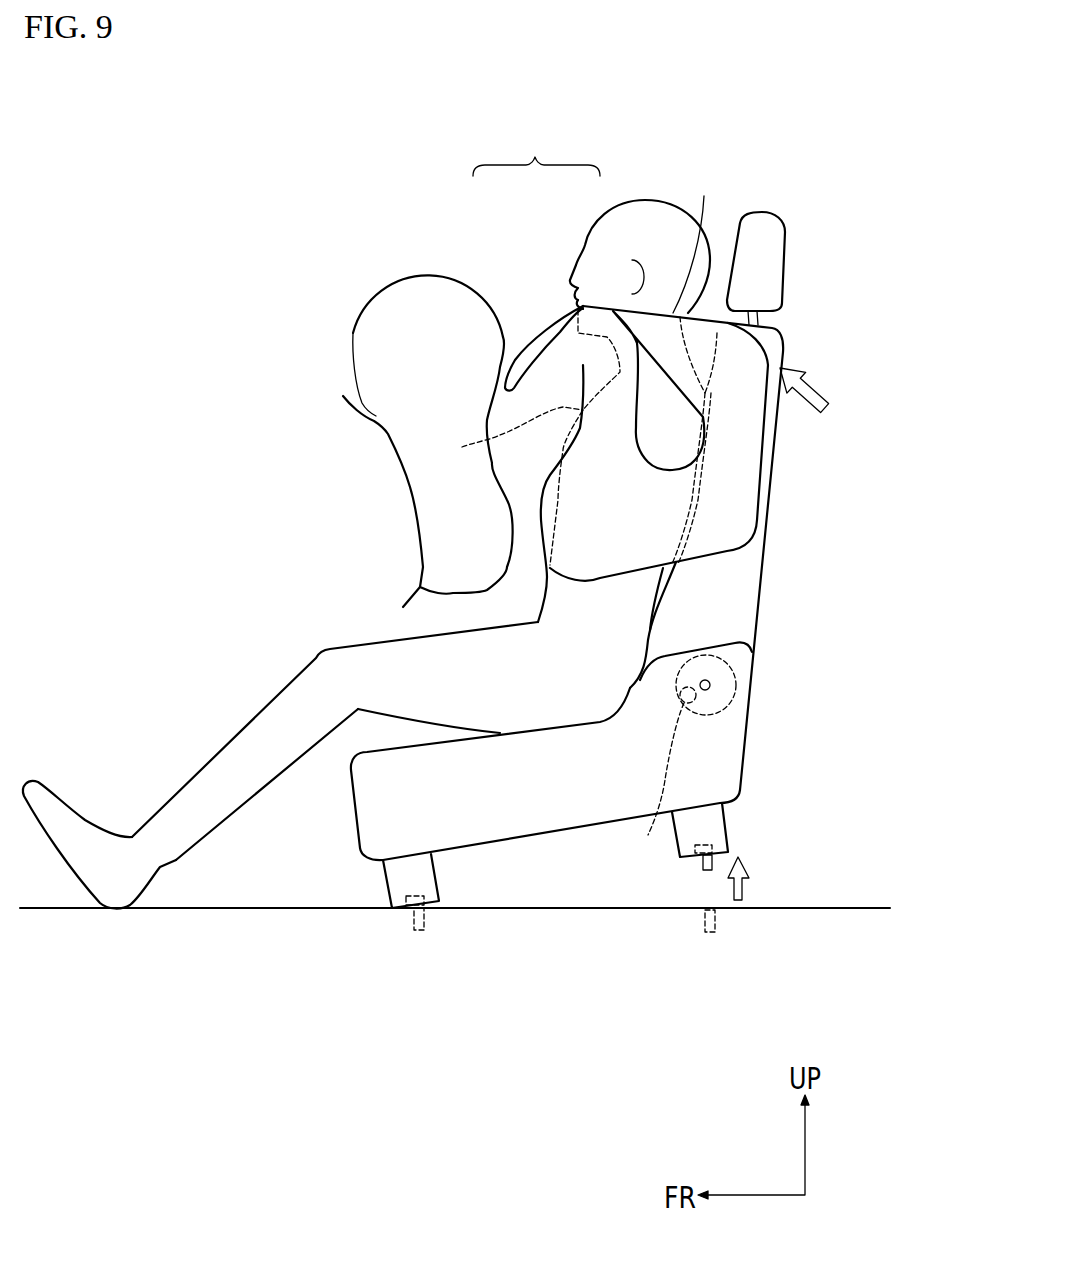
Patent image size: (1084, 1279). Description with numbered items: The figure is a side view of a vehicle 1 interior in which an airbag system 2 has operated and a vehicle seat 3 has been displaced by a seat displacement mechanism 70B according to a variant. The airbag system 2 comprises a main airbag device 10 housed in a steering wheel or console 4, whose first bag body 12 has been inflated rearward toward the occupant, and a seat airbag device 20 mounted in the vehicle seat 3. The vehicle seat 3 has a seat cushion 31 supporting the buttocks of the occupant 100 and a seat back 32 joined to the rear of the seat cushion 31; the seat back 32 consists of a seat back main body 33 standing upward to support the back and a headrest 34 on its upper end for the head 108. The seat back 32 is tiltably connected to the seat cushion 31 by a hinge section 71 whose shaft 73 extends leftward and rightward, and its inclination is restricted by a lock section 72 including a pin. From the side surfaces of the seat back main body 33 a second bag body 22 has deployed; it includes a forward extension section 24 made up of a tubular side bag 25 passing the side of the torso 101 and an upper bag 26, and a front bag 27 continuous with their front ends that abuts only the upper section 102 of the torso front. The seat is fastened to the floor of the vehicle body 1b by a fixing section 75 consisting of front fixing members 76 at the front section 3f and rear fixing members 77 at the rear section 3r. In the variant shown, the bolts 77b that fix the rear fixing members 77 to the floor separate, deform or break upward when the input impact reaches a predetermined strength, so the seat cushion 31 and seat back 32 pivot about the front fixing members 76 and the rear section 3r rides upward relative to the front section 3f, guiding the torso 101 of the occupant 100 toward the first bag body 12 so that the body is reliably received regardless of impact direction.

The vehicle 1 is at (333, 122).
The airbag system 2 is at (536, 146).
The main airbag device 10 is at (480, 278).
The seat airbag device 20 is at (545, 312).
The first bag body 12 is at (428, 275).
The console 4 is at (377, 417).
The front bag 27 is at (487, 402).
The upper section of front surface of torso 102 is at (497, 435).
The torso 101 is at (537, 606).
The side bag 25 is at (597, 565).
The forward extension section 24 is at (661, 393).
The occupant 100 is at (628, 204).
The occupant head top 108 is at (670, 204).
The second bag body 22 is at (695, 239).
The upper bag 26 is at (722, 326).
The headrest 34 is at (766, 210).
The seat back 32 is at (757, 595).
The seat back main body 33 is at (762, 548).
The vehicle seat 3 is at (782, 460).
The rear section of vehicle seat 3r is at (745, 743).
The hinge section 71 is at (732, 667).
The shaft 73 is at (712, 684).
The lock section 72 is at (660, 770).
The seat cushion 31 is at (515, 843).
The front section of vehicle seat 3f is at (365, 753).
The front fixing member 76 is at (383, 884).
The fixing section 75 is at (340, 980).
The rear fixing member 77 is at (727, 831).
The bolt 77b is at (700, 868).
The seat displacement mechanism 70B is at (690, 893).
The vehicle body 1b is at (870, 908).